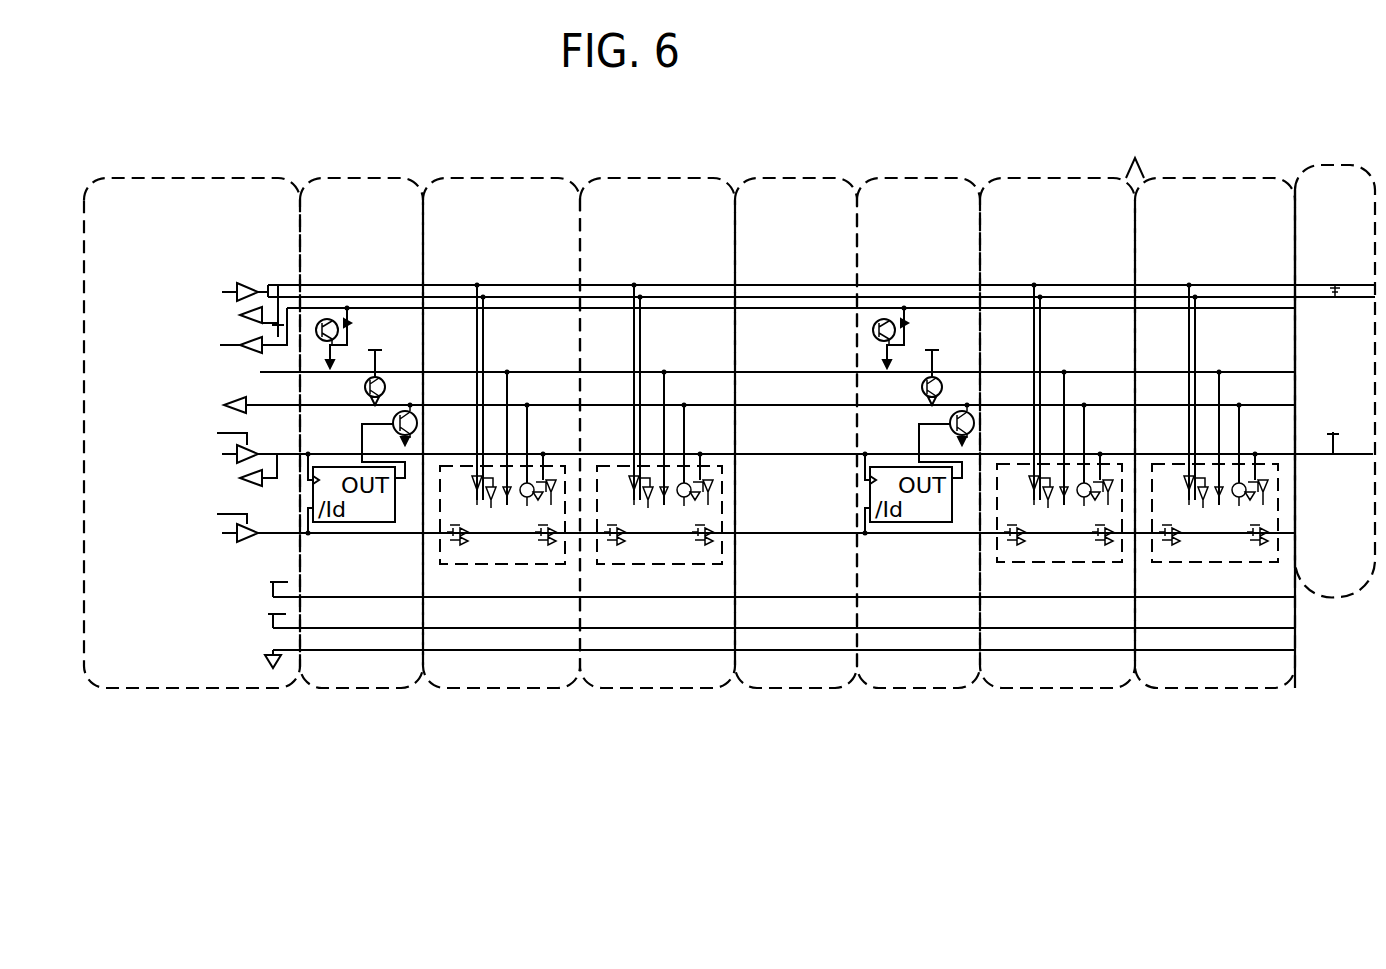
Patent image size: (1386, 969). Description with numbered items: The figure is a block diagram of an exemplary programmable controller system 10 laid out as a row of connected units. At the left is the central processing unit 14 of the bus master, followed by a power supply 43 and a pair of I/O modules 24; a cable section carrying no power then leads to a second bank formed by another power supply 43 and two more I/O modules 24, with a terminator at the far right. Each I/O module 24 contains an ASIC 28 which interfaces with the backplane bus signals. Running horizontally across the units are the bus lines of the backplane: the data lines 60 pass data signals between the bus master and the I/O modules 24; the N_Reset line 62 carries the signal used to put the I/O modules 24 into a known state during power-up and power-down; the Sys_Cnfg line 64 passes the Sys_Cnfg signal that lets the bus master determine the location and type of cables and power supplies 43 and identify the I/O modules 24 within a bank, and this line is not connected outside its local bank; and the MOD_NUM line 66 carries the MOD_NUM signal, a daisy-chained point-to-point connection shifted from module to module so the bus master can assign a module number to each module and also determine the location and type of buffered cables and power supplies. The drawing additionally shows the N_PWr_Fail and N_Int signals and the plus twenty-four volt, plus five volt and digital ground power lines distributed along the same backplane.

The programmable controller system 10 is at (323, 137).
The central processing unit 14 is at (238, 176).
The I/O module 24 is at (1135, 160).
The ASIC 28 is at (1063, 563).
The power supply 43 is at (932, 176).
The data line 60 is at (392, 298).
The N_Reset line 62 is at (600, 372).
The Sys_Cnfg line 64 is at (718, 452).
The MOD_NUM line 66 is at (356, 535).